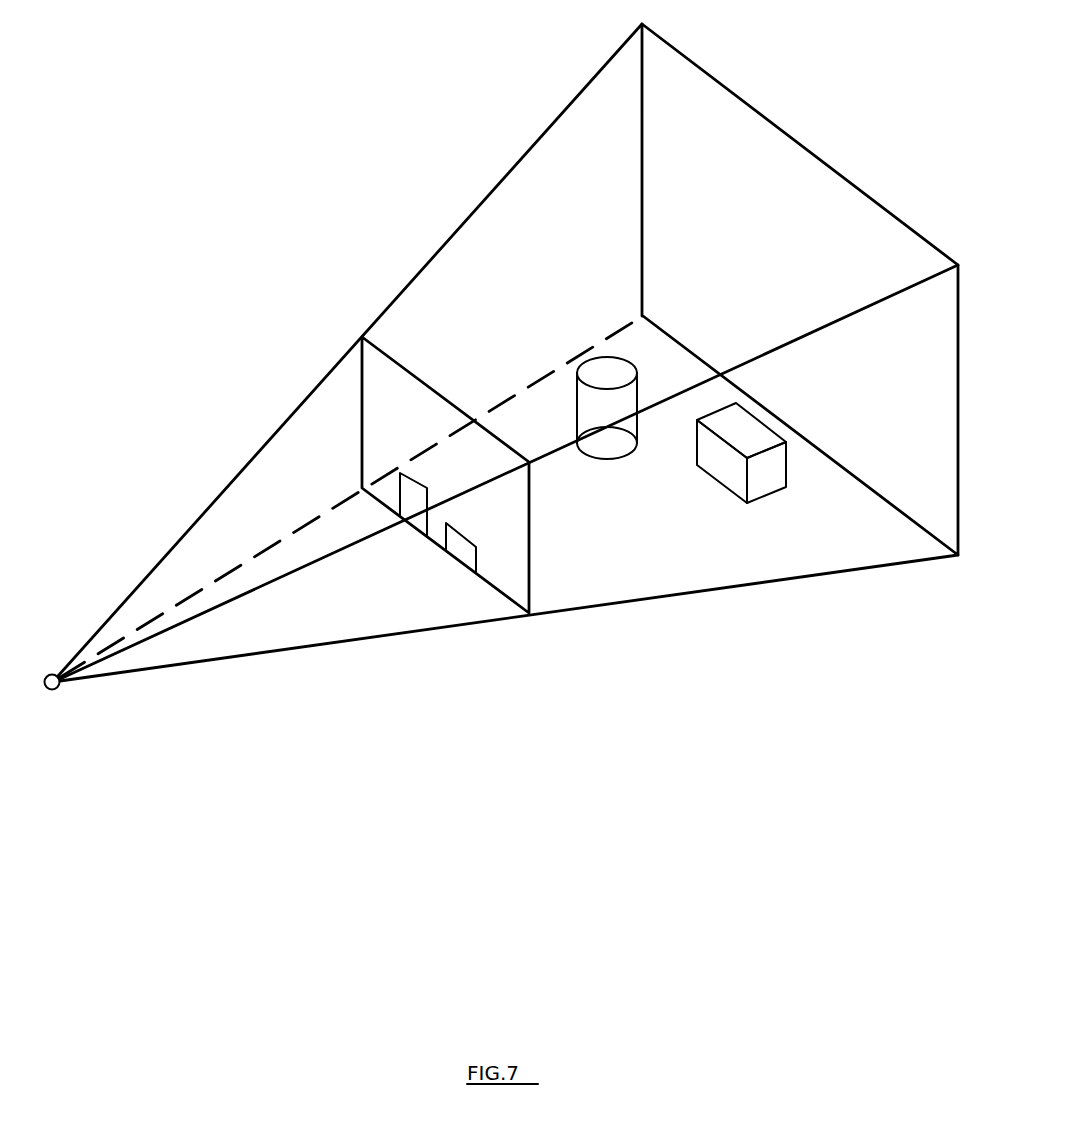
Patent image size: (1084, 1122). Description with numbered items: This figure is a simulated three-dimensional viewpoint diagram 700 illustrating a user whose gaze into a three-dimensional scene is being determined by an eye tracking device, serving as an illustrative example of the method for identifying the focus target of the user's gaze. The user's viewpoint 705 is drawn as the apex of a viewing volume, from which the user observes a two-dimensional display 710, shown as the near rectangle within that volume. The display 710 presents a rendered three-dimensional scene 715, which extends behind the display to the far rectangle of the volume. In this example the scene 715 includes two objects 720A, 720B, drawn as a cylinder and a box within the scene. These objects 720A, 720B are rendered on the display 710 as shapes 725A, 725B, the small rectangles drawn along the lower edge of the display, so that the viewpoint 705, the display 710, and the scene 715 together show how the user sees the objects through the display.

The simulated 3D viewpoint diagram 700 is at (325, 110).
The user's viewpoint 705 is at (57, 688).
The 2D display 710 is at (529, 587).
The rendered 3D scene 715 is at (814, 513).
The object 720A is at (583, 357).
The object 720B is at (749, 503).
The shape 725A is at (392, 490).
The shape 725B is at (477, 567).